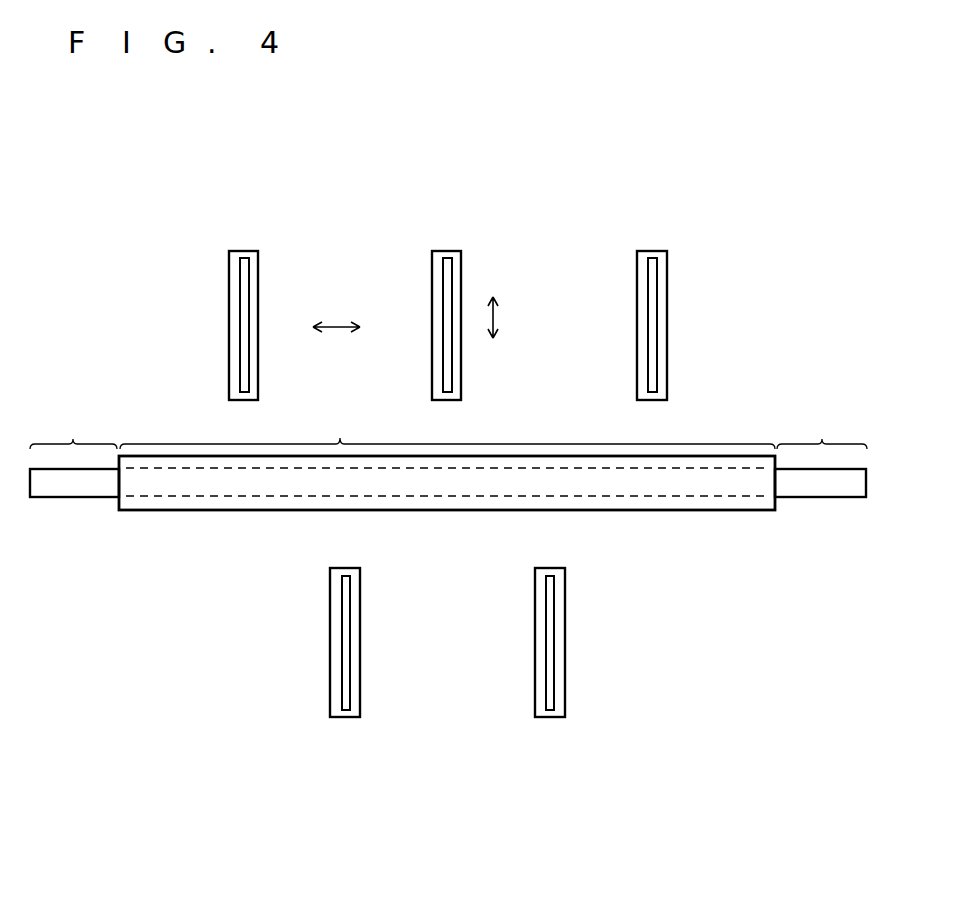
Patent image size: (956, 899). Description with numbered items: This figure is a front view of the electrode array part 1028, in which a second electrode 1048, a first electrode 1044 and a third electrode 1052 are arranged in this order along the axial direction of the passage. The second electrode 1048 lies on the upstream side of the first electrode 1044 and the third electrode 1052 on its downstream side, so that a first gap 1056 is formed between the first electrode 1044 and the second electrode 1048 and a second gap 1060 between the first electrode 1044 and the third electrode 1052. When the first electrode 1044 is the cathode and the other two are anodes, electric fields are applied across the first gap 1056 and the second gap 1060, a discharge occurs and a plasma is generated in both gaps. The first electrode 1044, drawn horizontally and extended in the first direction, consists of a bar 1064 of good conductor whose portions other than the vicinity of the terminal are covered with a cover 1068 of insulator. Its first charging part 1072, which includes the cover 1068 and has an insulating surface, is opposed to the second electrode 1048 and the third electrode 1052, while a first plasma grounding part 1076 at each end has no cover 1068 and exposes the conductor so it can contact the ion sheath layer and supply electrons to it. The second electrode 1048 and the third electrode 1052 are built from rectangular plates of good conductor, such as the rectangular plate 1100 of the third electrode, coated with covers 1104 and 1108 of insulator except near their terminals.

The electrode array part 1028 is at (757, 399).
The first electrode 1044 is at (447, 516).
The second electrode 1048 is at (243, 250).
The third electrode 1052 is at (347, 718).
The first gap 1056 is at (651, 357).
The second gap 1060 is at (342, 537).
The bar 1064 is at (823, 490).
The cover 1068 is at (727, 502).
The first charging part 1072 is at (447, 429).
The first plasma grounding part 1076 is at (448, 452).
The rectangular plate 1100 is at (548, 612).
The cover 1104 is at (660, 299).
The cover 1108 is at (560, 655).